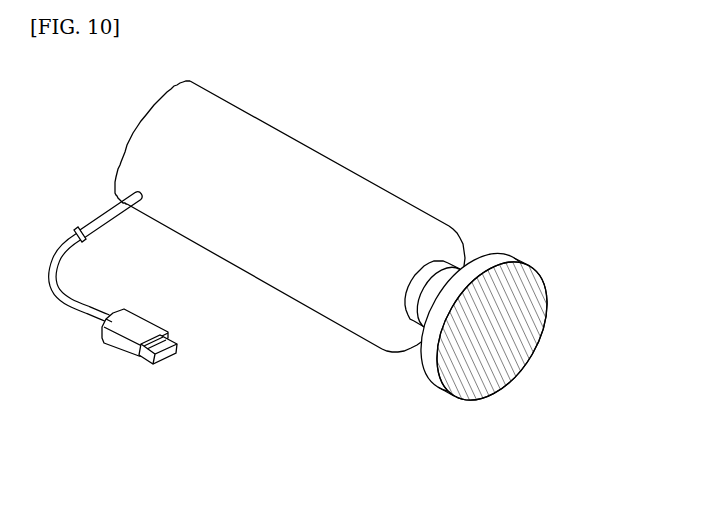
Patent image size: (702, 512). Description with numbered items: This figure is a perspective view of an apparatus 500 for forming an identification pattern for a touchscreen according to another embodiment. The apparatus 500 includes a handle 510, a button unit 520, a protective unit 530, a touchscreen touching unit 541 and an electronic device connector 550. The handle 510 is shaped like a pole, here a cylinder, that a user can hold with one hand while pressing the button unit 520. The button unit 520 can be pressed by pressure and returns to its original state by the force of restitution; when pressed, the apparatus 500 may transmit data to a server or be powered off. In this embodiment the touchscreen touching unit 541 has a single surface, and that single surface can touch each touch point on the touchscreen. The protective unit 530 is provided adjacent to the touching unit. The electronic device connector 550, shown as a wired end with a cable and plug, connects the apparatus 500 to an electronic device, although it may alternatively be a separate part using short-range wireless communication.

The apparatus for forming an identification pattern for a touchscreen 500 is at (320, 287).
The handle 510 is at (315, 148).
The button unit 520 is at (462, 256).
The protective unit 530 is at (438, 382).
The touchscreen touching unit 541 is at (537, 352).
The electronic device connector 550 is at (118, 352).